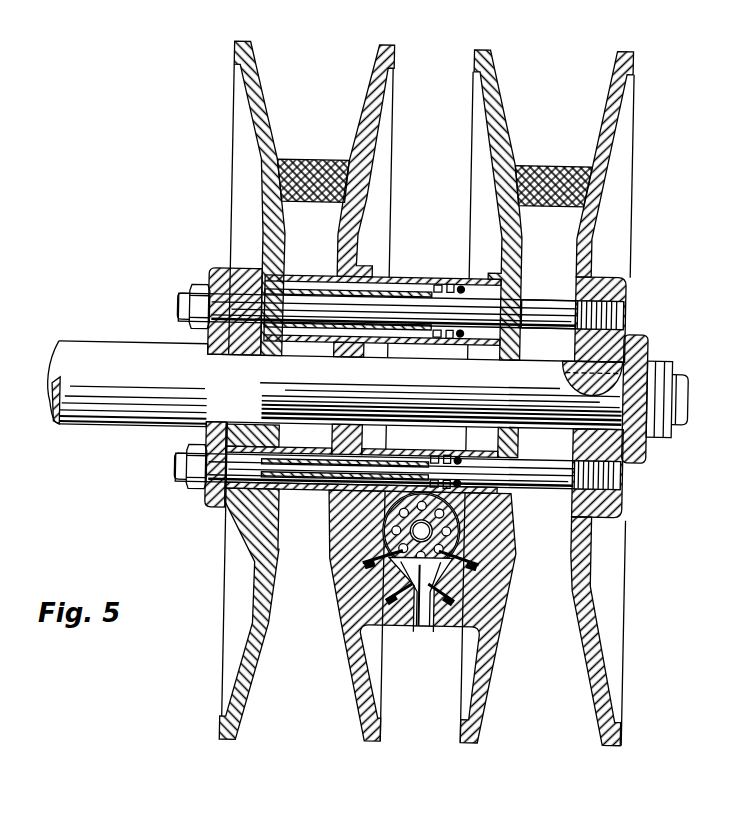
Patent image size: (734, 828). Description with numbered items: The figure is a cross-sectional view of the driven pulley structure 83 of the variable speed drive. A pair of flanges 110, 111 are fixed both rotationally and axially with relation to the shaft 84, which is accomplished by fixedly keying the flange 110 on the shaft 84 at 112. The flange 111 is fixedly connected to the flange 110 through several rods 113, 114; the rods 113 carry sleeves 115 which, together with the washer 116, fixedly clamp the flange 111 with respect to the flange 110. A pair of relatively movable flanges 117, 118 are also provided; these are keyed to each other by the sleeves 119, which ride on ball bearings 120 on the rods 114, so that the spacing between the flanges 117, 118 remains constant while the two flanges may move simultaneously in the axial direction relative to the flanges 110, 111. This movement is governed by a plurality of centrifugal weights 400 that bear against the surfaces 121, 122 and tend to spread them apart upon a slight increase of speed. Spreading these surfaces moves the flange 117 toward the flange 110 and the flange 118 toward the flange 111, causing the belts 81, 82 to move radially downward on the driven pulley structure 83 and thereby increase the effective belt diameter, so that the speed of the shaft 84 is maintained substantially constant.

The driven pulley structure 83 is at (438, 83).
The movable flange 118 is at (249, 61).
The fixed flange 111 is at (385, 47).
The movable flange 117 is at (487, 66).
The fixed flange 110 is at (616, 50).
The belt 82 is at (300, 184).
The belt 81 is at (532, 178).
The shaft 84 is at (116, 356).
The washer 116 is at (203, 503).
The rod 113 is at (551, 495).
The sleeve 119 is at (397, 280).
The ball bearing 120 is at (437, 290).
The rod 114 is at (538, 308).
The sleeve 115 is at (307, 494).
The key 112 is at (619, 363).
The centrifugal weight 400 is at (437, 628).
The surface 121 is at (452, 628).
The surface 122 is at (402, 628).